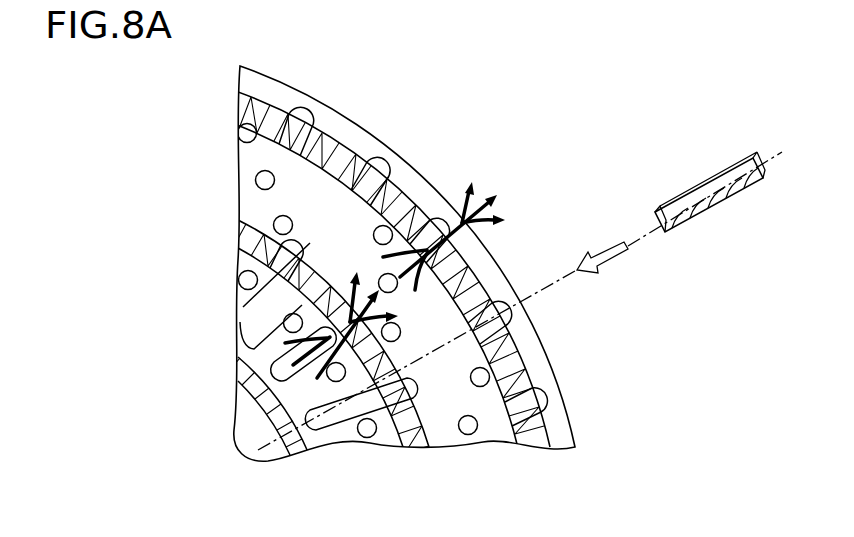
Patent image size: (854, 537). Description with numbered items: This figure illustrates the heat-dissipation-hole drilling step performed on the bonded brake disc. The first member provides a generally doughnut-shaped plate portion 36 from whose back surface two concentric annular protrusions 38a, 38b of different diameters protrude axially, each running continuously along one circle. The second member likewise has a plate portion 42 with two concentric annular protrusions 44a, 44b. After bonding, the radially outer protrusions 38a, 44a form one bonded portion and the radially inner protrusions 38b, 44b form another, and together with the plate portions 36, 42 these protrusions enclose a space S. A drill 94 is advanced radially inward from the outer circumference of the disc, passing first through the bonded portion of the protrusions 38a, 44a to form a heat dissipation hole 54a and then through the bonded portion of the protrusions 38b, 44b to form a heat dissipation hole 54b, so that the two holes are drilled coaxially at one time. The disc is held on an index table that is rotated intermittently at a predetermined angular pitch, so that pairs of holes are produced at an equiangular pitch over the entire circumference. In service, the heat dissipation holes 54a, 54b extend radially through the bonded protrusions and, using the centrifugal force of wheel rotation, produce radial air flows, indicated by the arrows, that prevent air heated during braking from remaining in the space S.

The plate portion 36 is at (373, 254).
The plate portion 42 is at (303, 190).
The heat dissipation hole 54a is at (392, 162).
The heat dissipation hole 54b is at (290, 246).
The annular protrusion 38a is at (478, 202).
The annular protrusion 44a is at (405, 174).
The annular protrusion 38b is at (269, 313).
The annular protrusion 44b is at (290, 321).
The space S is at (443, 378).
The drill 94 is at (724, 182).